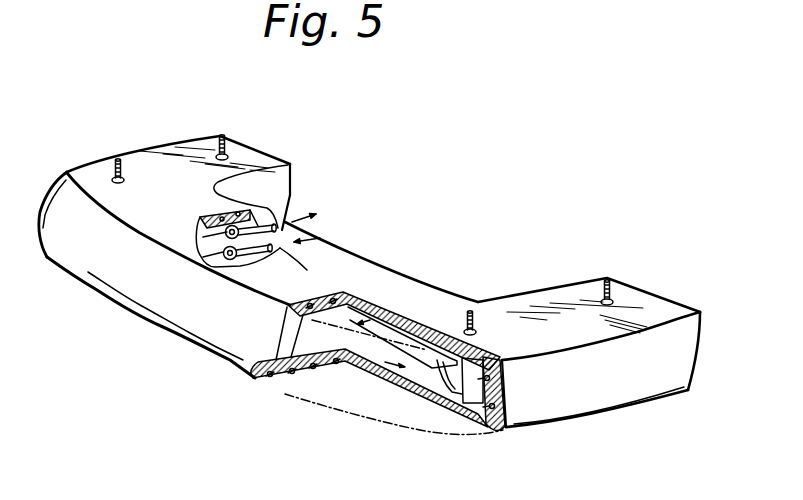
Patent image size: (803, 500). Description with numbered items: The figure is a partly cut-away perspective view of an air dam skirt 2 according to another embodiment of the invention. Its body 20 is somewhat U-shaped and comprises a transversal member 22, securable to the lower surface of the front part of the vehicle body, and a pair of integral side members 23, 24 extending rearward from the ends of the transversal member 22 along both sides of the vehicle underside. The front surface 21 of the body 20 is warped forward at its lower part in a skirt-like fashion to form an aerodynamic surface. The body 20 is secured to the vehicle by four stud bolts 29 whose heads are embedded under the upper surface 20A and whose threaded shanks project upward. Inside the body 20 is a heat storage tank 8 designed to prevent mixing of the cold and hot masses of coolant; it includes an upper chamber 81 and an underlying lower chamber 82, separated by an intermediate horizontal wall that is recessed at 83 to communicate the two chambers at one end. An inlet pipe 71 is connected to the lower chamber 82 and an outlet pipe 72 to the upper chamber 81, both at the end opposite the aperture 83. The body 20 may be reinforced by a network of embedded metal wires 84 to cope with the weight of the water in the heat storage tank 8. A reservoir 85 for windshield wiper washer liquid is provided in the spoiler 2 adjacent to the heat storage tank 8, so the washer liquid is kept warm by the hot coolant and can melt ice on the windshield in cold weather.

The air dam skirt 2 is at (118, 325).
The heat storage tank 8 is at (365, 382).
The body 20 is at (155, 333).
The upper surface 20A is at (570, 297).
The front surface 21 is at (97, 275).
The transversal member 22 is at (343, 292).
The side member 23 is at (599, 407).
The side member 24 is at (179, 158).
The stud bolts 29 is at (121, 161).
The inlet pipe 71 is at (330, 252).
The outlet pipe 72 is at (273, 222).
The upper chamber 81 is at (402, 335).
The lower chamber 82 is at (420, 378).
The recess 83 is at (447, 382).
The embedded metal wires 84 is at (341, 295).
The reservoir 85 is at (488, 436).